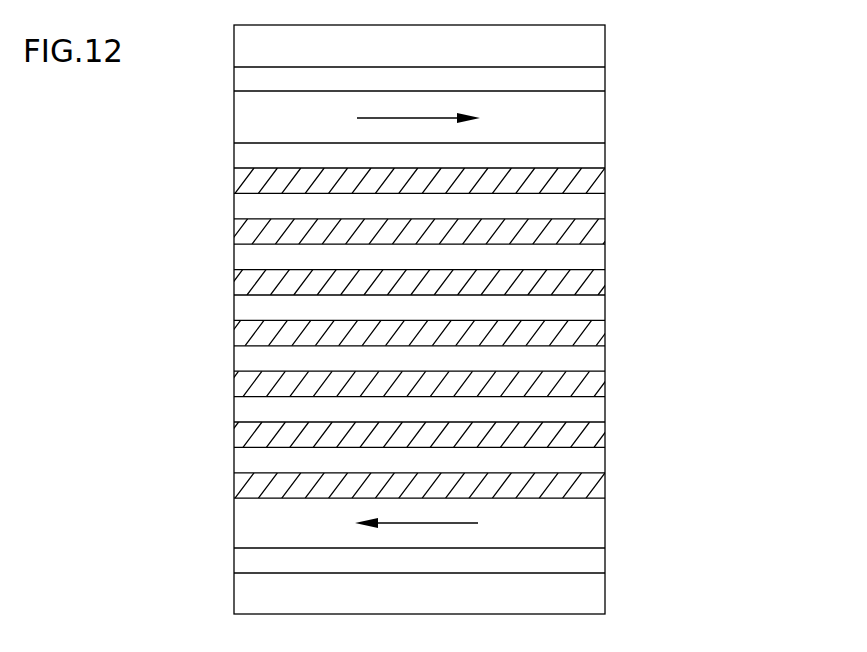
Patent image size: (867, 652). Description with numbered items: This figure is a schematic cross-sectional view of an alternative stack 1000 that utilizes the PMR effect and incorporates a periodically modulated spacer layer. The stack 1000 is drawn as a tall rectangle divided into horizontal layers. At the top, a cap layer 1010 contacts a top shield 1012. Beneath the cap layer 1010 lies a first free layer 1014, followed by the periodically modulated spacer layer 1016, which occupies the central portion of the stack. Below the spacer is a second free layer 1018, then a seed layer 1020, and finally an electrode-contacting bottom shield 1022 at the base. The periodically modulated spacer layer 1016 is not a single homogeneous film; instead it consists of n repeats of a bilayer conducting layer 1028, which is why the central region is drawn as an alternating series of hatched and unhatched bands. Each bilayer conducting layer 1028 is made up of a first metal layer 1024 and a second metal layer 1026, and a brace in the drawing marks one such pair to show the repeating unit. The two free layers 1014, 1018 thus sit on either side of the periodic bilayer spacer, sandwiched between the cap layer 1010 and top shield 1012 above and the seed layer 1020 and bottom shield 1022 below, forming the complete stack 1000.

The stack 1000 is at (722, 123).
The cap layer 1010 is at (245, 81).
The top shield 1012 is at (245, 47).
The first free layer 1014 is at (245, 116).
The periodically modulated spacer layer 1016 is at (210, 143).
The second free layer 1018 is at (243, 522).
The seed layer 1020 is at (243, 560).
The bottom shield 1022 is at (243, 600).
The first metal layer 1024 is at (600, 177).
The second metal layer 1026 is at (600, 210).
The bilayer conducting layer 1028 is at (628, 171).